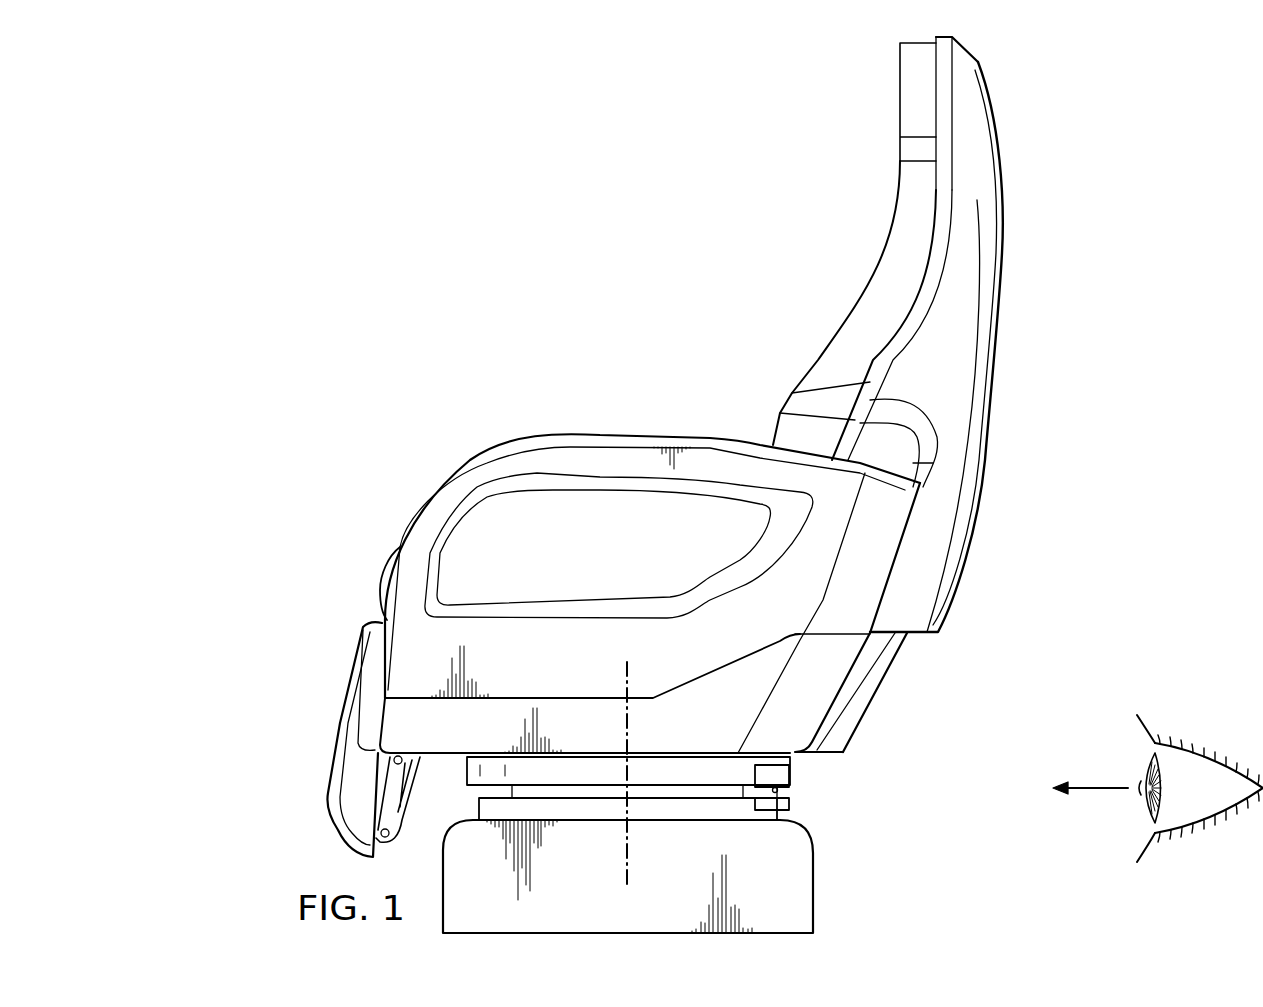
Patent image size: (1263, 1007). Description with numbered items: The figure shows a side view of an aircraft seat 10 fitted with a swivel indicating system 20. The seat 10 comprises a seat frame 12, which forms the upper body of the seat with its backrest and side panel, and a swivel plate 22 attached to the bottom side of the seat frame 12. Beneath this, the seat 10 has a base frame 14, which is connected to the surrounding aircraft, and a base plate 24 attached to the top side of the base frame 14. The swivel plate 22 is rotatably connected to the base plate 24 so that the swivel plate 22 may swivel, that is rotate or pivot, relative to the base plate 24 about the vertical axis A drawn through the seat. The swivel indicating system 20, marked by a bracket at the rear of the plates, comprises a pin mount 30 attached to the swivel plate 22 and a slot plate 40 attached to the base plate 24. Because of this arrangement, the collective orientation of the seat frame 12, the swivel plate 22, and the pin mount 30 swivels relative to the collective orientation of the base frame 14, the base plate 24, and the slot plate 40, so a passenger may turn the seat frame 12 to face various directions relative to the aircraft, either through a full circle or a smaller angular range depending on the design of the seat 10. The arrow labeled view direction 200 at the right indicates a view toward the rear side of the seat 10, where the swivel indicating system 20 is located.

The aircraft seat 10 is at (428, 110).
The seat frame 12 is at (524, 440).
The base frame 14 is at (813, 891).
The swivel indicating system 20 is at (880, 753).
The swivel plate 22 is at (467, 770).
The base plate 24 is at (479, 810).
The pin mount 30 is at (791, 775).
The slot plate 40 is at (791, 807).
The view direction 200 is at (1090, 787).